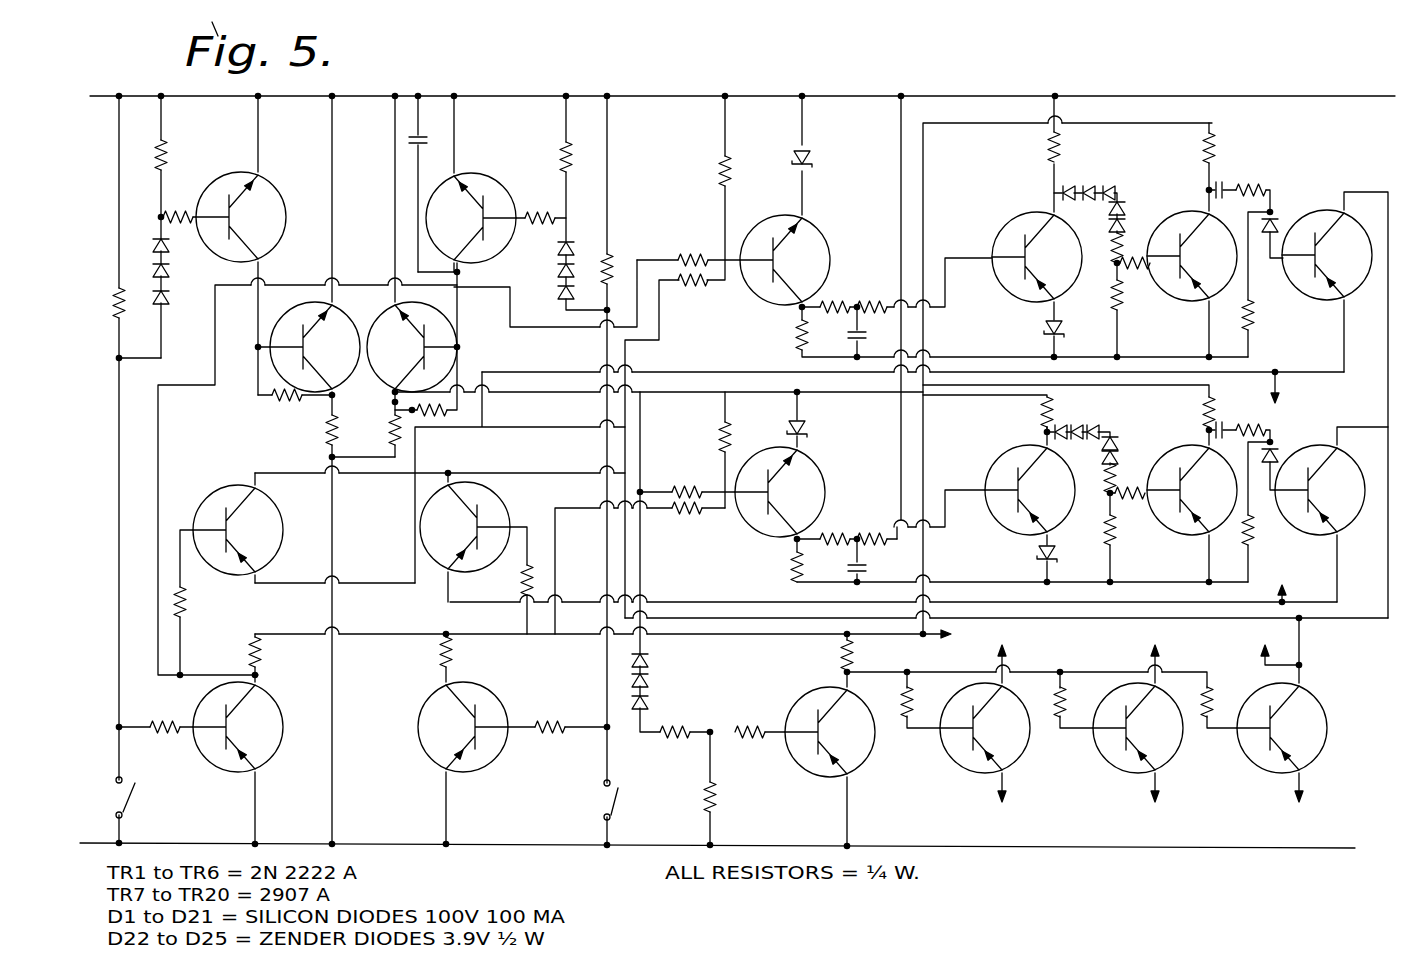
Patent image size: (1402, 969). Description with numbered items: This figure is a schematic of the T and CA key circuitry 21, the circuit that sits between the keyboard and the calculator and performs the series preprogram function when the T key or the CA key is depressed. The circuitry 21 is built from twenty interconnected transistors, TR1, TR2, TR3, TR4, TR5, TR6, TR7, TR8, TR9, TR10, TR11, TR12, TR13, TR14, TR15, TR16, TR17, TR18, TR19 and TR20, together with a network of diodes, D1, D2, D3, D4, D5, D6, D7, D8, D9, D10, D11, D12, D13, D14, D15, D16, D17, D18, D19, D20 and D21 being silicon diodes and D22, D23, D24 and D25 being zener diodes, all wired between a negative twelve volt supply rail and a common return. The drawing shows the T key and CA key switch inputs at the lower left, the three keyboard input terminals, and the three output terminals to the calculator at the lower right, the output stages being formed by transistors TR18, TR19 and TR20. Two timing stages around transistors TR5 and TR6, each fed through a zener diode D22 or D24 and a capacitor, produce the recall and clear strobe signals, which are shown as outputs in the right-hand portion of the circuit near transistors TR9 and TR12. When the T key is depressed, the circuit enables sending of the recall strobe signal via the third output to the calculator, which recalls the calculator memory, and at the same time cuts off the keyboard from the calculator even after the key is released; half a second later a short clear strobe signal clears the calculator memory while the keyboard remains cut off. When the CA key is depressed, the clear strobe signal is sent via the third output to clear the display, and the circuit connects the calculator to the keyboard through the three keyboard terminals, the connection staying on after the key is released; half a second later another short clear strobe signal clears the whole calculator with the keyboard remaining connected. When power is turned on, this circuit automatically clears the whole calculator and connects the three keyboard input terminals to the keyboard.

The T and CA key circuitry 21 is at (875, 68).
The transistor TR1 is at (248, 245).
The transistor TR2 is at (496, 184).
The transistor TR3 is at (311, 470).
The transistor TR4 is at (412, 276).
The transistor TR5 is at (744, 245).
The transistor TR6 is at (797, 472).
The transistor TR7 is at (1022, 226).
The transistor TR8 is at (1192, 240).
The transistor TR9 is at (1335, 405).
The transistor TR10 is at (986, 504).
The transistor TR11 is at (1192, 489).
The transistor TR12 is at (1331, 514).
The transistor TR13 is at (228, 567).
The transistor TR14 is at (479, 553).
The transistor TR15 is at (254, 739).
The transistor TR16 is at (512, 739).
The transistor TR17 is at (822, 739).
The transistor TR18 is at (994, 723).
The transistor TR19 is at (1147, 723).
The transistor TR20 is at (1300, 710).
The silicon diode D1 is at (172, 248).
The silicon diode D2 is at (172, 273).
The silicon diode D3 is at (172, 299).
The silicon diode D4 is at (551, 249).
The silicon diode D5 is at (551, 271).
The silicon diode D6 is at (551, 293).
The silicon diode D7 is at (651, 661).
The silicon diode D8 is at (651, 681).
The silicon diode D9 is at (651, 703).
The silicon diode D10 is at (1068, 184).
The silicon diode D11 is at (1091, 183).
The silicon diode D12 is at (1113, 183).
The silicon diode D13 is at (1132, 207).
The silicon diode D14 is at (1132, 227).
The silicon diode D15 is at (1285, 219).
The silicon diode D16 is at (1069, 425).
The silicon diode D17 is at (1070, 441).
The silicon diode D18 is at (1103, 424).
The silicon diode D19 is at (1124, 443).
The silicon diode D20 is at (1124, 458).
The silicon diode D21 is at (1285, 449).
The zener diode D22 is at (821, 131).
The zener diode D23 is at (1071, 328).
The zener diode D24 is at (816, 426).
The zener diode D25 is at (1067, 553).